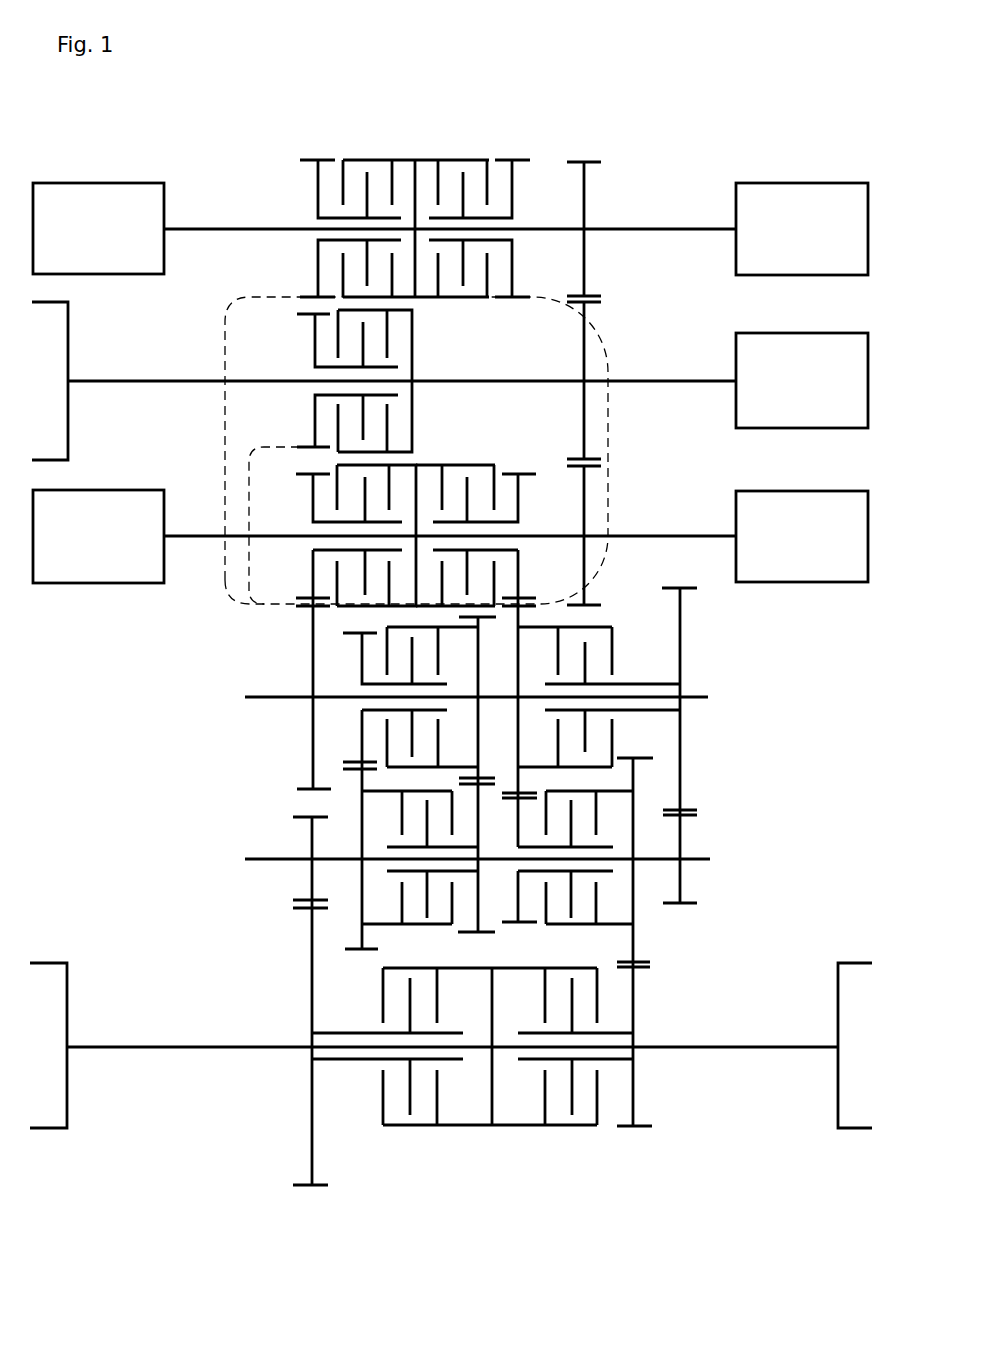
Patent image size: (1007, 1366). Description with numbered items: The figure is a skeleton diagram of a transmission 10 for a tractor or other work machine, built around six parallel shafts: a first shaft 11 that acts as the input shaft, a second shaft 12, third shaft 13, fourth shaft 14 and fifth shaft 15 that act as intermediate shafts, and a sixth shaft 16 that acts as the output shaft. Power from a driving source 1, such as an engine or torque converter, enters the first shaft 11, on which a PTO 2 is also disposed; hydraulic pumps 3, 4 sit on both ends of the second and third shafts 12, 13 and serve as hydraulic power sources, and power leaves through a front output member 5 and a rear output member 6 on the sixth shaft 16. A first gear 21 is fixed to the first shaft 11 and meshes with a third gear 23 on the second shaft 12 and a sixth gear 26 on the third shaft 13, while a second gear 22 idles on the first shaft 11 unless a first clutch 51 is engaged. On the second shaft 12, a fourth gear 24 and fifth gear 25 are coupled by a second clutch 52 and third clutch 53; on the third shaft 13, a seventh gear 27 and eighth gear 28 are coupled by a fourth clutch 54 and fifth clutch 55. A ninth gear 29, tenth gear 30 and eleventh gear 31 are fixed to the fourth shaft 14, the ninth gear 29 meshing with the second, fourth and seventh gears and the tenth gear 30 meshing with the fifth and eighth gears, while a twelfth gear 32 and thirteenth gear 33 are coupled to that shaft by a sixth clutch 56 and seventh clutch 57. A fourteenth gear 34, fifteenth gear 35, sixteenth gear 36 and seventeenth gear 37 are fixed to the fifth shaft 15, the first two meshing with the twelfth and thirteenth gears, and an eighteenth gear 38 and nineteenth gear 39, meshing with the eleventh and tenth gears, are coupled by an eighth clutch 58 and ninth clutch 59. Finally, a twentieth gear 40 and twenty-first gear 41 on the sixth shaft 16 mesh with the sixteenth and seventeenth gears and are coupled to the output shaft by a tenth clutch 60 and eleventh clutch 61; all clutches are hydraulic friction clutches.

The driving source 1 is at (68, 413).
The PTO 2 is at (822, 334).
The hydraulic pump 3 is at (112, 583).
The hydraulic pump 4 is at (96, 197).
The front output member 5 is at (50, 1129).
The rear output member 6 is at (855, 1129).
The transmission 10 is at (813, 88).
The first shaft 11 is at (147, 381).
The second shaft 12 is at (185, 536).
The third shaft 13 is at (202, 229).
The fourth shaft 14 is at (283, 697).
The fifth shaft 15 is at (262, 859).
The sixth shaft 16 is at (197, 1047).
The first gear 21 is at (594, 309).
The second gear 22 is at (315, 340).
The third gear 23 is at (586, 601).
The fourth gear 24 is at (313, 571).
The fifth gear 25 is at (530, 474).
The sixth gear 26 is at (588, 197).
The seventh gear 27 is at (312, 160).
The eighth gear 28 is at (530, 160).
The ninth gear 29 is at (312, 641).
The tenth gear 30 is at (518, 706).
The eleventh gear 31 is at (479, 683).
The twelfth gear 32 is at (361, 645).
The thirteenth gear 33 is at (682, 628).
The fourteenth gear 34 is at (362, 930).
The fifteenth gear 35 is at (683, 835).
The sixteenth gear 36 is at (293, 818).
The seventeenth gear 37 is at (635, 947).
The eighteenth gear 38 is at (480, 913).
The nineteenth gear 39 is at (505, 923).
The twentieth gear 40 is at (312, 1140).
The twenty-first gear 41 is at (636, 1097).
The first clutch 51 is at (412, 340).
The second clutch 52 is at (408, 464).
The third clutch 53 is at (470, 465).
The fourth clutch 54 is at (400, 160).
The fifth clutch 55 is at (460, 160).
The sixth clutch 56 is at (440, 758).
The seventh clutch 57 is at (613, 653).
The eighth clutch 58 is at (400, 806).
The ninth clutch 59 is at (600, 805).
The tenth clutch 60 is at (423, 1125).
The eleventh clutch 61 is at (583, 1125).